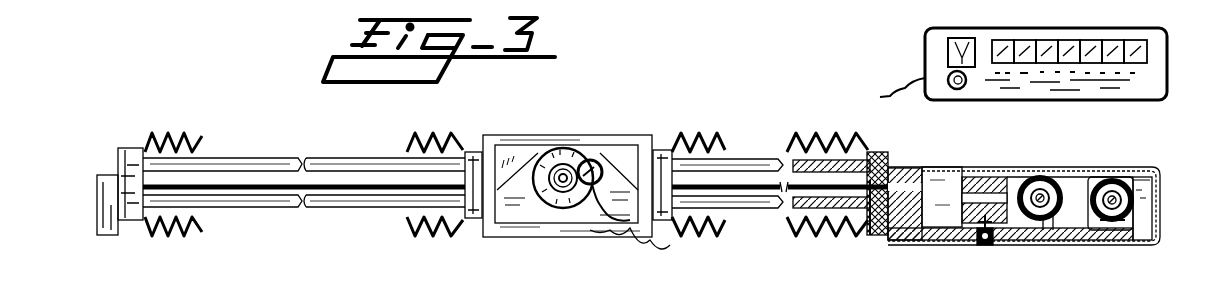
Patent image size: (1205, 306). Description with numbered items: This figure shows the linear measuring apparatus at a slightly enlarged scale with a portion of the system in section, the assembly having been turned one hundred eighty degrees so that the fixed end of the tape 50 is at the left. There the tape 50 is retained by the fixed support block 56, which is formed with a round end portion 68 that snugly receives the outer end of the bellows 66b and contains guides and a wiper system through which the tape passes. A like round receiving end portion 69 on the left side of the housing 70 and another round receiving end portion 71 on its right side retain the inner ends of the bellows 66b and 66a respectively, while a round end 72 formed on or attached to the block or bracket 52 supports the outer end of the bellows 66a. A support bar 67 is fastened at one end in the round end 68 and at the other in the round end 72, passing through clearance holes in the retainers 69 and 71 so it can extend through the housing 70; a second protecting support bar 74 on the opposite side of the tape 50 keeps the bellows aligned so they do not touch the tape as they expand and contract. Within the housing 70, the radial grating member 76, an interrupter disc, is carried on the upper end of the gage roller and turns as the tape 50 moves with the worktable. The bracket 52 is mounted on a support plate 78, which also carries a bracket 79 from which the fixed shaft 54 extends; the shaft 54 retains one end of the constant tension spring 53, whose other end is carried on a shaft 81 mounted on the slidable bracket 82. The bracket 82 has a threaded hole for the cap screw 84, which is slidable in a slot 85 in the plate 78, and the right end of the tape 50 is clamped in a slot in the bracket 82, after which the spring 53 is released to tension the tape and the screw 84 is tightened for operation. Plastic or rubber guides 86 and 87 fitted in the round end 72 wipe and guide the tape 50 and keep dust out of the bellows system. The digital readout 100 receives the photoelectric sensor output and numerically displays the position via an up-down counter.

The tape 50 is at (244, 207).
The block or bracket 52 is at (908, 168).
The constant tension spring 53 is at (1073, 178).
The fixed shaft 54 is at (1120, 178).
The fixed support block 56 is at (106, 175).
The bellows 66a is at (762, 122).
The bellows 66b is at (478, 110).
The support bar 67 is at (742, 208).
The round end portion 68 is at (122, 148).
The round receiving end portion 69 is at (476, 152).
The housing 70 is at (580, 237).
The round receiving end portion 71 is at (661, 150).
The round end 72 is at (898, 168).
The second protecting support bar 74 is at (224, 158).
The radial grating member 76 is at (556, 207).
The support plate 78 is at (1078, 240).
The bracket 79 is at (1120, 218).
The shaft 81 is at (1043, 178).
The slidable bracket 82 is at (958, 180).
The cap screw 84 is at (990, 245).
The slot 85 is at (978, 242).
The guide 86 is at (868, 235).
The guide 87 is at (874, 152).
The digital readout 100 is at (1052, 28).